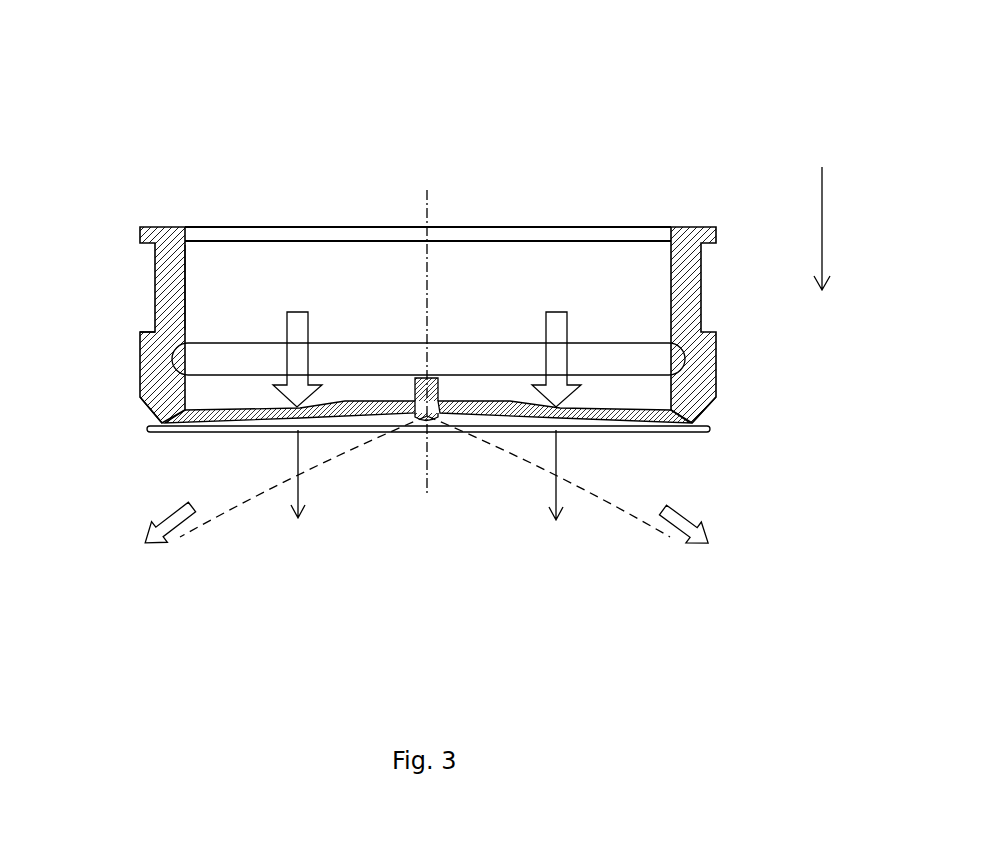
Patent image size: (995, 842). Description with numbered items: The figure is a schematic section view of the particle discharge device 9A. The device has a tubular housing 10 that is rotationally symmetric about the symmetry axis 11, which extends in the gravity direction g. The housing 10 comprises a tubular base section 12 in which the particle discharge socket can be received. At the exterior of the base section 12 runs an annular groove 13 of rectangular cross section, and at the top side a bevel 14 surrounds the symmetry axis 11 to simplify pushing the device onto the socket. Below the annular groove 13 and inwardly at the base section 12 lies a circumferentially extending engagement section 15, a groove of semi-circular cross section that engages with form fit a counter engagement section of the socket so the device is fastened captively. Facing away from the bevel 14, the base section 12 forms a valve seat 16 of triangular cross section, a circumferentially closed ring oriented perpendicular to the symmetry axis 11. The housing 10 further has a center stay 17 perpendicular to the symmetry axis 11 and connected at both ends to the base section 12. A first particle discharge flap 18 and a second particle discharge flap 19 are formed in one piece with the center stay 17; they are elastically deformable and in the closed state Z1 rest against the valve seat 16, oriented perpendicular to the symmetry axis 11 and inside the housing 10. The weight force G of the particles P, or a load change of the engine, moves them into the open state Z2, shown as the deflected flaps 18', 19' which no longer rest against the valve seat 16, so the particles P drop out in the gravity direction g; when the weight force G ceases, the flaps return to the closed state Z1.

The particle discharge device 9A is at (376, 80).
The housing 10 is at (232, 226).
The symmetry axis 11 is at (428, 200).
The tubular base section 12 is at (187, 297).
The annular groove 13 is at (153, 287).
The bevel 14 is at (701, 226).
The engagement section 15 is at (140, 355).
The valve seat 16 is at (708, 410).
The center stay 17 is at (440, 377).
The first particle discharge flap 18 is at (290, 295).
The second particle discharge flap 19 is at (564, 268).
The first particle discharge flap in open state 18' is at (303, 503).
The second particle discharge flap in open state 19' is at (548, 504).
The particles P is at (162, 406).
The weight force G is at (425, 475).
The closed state Z1 is at (208, 432).
The open state Z2 is at (350, 500).
The gravity direction g is at (830, 228).